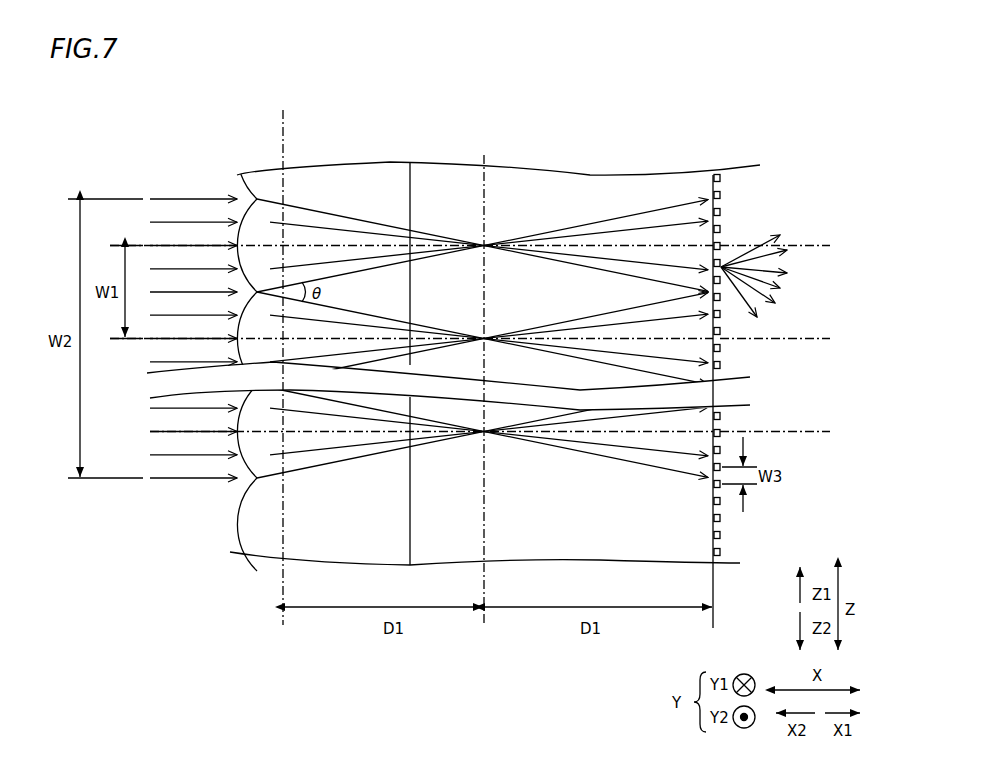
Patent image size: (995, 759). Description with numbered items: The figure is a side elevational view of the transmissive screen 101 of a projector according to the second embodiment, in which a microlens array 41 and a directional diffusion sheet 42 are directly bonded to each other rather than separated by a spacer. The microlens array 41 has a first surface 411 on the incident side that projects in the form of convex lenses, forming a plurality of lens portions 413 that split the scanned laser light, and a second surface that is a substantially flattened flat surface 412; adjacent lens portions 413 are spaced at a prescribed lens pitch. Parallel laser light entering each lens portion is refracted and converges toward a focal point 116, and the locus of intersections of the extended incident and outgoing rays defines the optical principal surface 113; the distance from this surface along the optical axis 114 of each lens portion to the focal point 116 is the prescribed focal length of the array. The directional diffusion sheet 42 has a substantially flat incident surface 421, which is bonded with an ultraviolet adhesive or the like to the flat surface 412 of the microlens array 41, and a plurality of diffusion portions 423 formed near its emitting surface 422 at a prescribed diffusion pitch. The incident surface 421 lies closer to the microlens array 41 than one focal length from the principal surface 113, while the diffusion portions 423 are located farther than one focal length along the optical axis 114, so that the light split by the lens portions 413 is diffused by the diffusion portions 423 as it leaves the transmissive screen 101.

The transmissive screen 101 is at (483, 336).
The microlens array 41 is at (302, 349).
The first surface 411 is at (240, 540).
The flat surface 412 is at (410, 508).
The lens portions 413 is at (333, 198).
The directional diffusion sheet 42 is at (524, 349).
The incident surface 421 is at (400, 162).
The emitting surface 422 is at (718, 188).
The diffusion portions 423 is at (722, 208).
The optical principal surface 113 is at (283, 140).
The optical axis 114 is at (817, 245).
The focal point 116 is at (482, 250).